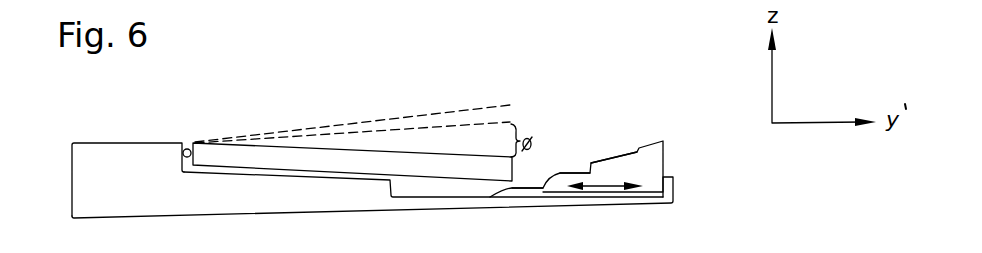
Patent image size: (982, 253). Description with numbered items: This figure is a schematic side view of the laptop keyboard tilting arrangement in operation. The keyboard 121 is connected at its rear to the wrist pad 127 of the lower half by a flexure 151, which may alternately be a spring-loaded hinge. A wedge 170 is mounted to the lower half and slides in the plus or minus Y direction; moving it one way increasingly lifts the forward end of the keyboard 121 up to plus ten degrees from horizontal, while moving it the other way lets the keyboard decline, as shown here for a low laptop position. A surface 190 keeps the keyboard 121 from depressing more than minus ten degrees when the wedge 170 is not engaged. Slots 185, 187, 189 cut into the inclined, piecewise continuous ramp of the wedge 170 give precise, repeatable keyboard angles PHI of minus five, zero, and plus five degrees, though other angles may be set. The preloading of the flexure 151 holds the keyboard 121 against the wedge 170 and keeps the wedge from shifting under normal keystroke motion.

The keyboard 121 is at (285, 140).
The wrist pad 127 is at (130, 143).
The flexure 151 is at (187, 147).
The wedge 170 is at (666, 162).
The slot 185 is at (542, 186).
The slot 187 is at (591, 163).
The slot 189 is at (628, 150).
The surface 190 is at (317, 181).